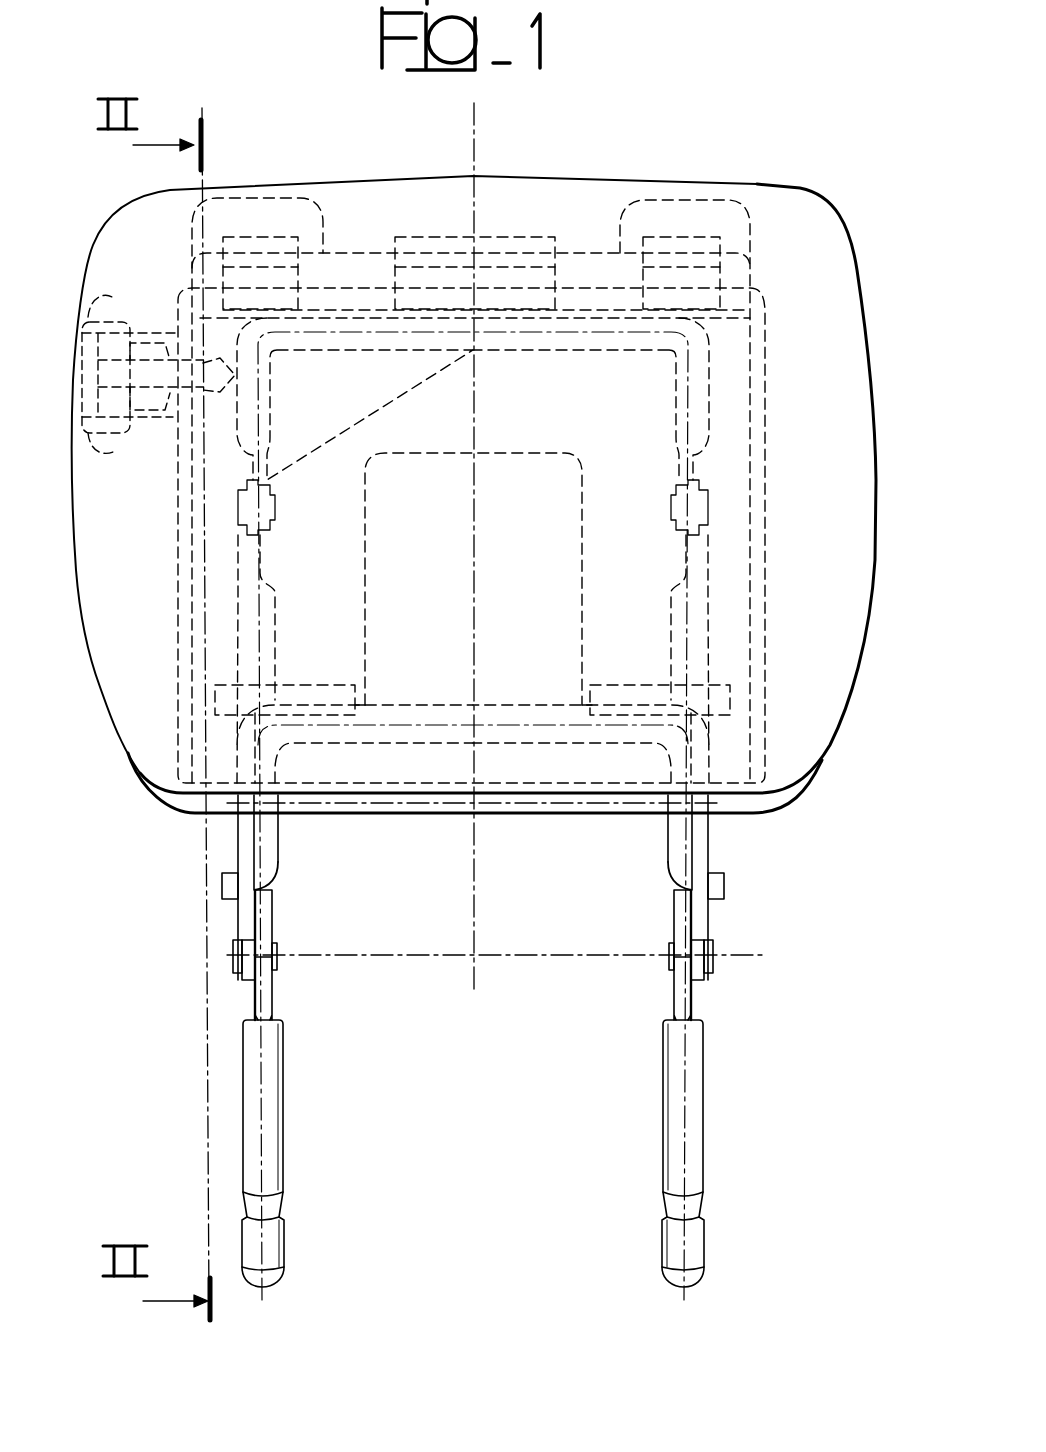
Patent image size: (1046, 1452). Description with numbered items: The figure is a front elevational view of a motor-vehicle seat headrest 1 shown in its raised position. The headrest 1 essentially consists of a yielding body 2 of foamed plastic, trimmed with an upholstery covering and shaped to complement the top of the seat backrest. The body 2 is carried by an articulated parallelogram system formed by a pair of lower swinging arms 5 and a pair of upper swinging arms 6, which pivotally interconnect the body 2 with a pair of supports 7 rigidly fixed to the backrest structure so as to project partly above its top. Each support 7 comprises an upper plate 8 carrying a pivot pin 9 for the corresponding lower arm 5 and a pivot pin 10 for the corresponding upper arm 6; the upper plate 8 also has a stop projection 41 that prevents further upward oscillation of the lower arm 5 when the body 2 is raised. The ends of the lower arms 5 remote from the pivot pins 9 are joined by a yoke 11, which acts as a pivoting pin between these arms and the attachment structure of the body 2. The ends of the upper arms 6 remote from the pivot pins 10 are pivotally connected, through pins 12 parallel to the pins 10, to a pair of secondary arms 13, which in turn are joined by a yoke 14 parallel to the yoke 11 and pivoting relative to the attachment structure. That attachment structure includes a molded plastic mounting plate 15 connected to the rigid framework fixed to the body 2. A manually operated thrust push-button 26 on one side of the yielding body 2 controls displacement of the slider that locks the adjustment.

The headrest 1 is at (855, 210).
The yielding body 2 is at (758, 192).
The lower swinging arms 5 is at (242, 848).
The upper swinging arms 6 is at (285, 470).
The supports 7 is at (296, 1080).
The upper plate 8 is at (273, 915).
The pivot pin 9 is at (282, 952).
The pivot pin 10 is at (272, 880).
The yoke 11 is at (512, 735).
The pins 12 is at (276, 507).
The secondary arms 13 is at (278, 403).
The yoke 14 is at (407, 340).
The mounting plate 15 is at (760, 548).
The thrust push-button 26 is at (83, 322).
The stop projection 41 is at (232, 886).